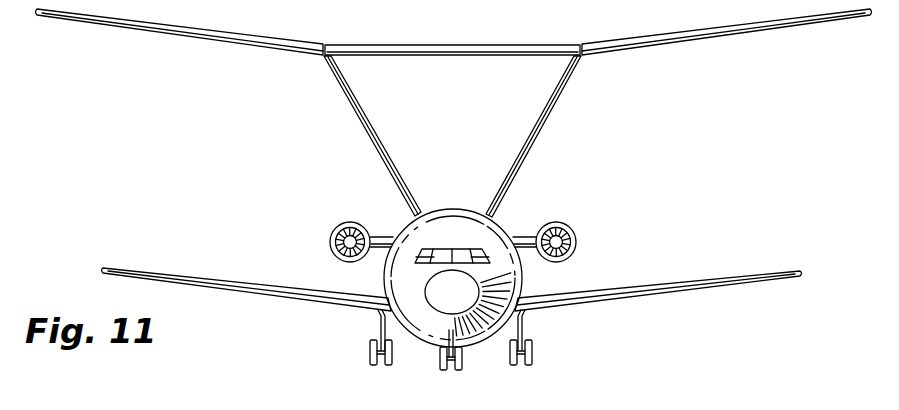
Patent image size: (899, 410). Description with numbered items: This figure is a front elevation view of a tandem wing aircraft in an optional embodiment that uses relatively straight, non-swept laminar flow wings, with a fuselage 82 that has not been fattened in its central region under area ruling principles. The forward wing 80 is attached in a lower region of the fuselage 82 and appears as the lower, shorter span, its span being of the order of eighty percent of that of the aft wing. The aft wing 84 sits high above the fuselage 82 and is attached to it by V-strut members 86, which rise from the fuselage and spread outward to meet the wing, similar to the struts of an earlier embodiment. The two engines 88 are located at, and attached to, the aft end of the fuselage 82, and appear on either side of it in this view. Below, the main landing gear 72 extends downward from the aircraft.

The landing gear 72 is at (370, 347).
The lower wing 80 is at (210, 280).
The fuselage 82 is at (495, 227).
The upper wing 84 is at (650, 35).
The struts 86 is at (368, 133).
The engines 88 is at (333, 224).